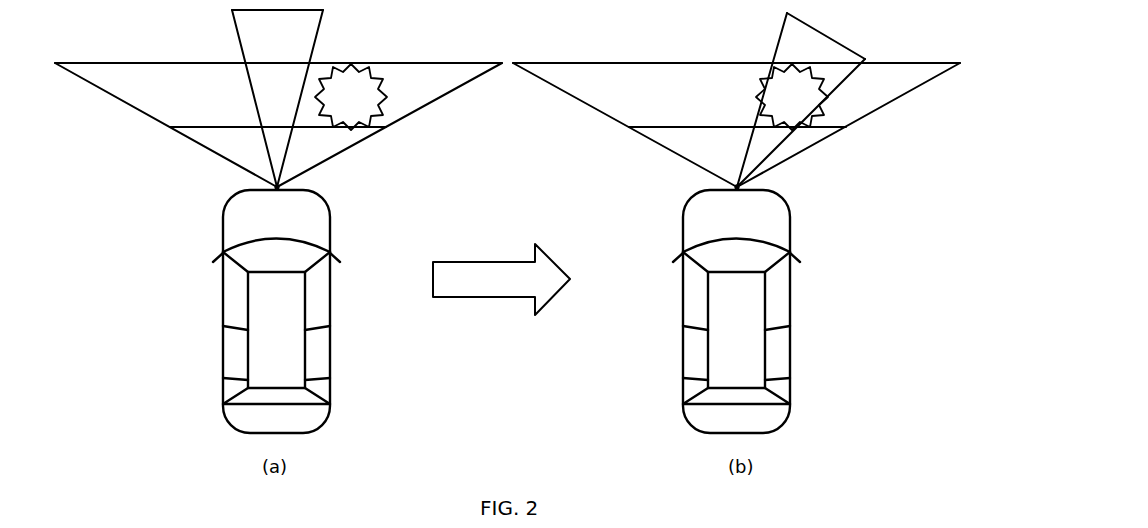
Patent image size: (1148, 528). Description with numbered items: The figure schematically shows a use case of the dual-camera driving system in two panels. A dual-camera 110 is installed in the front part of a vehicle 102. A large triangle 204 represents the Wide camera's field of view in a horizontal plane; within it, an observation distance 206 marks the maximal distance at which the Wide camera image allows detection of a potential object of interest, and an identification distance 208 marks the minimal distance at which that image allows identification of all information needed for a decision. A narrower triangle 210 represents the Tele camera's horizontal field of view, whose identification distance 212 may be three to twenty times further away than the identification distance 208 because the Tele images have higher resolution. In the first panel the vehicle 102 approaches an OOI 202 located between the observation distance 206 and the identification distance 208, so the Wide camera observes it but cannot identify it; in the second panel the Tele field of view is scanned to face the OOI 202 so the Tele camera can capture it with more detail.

The vehicle 102 is at (683, 361).
The dual-camera 110 is at (245, 190).
The OOI 202 is at (571, 97).
The triangle 204 is at (697, 172).
The observation distance 206 is at (633, 60).
The identification distance 208 is at (310, 128).
The triangle 210 is at (782, 37).
The identification distance 212 is at (232, 11).